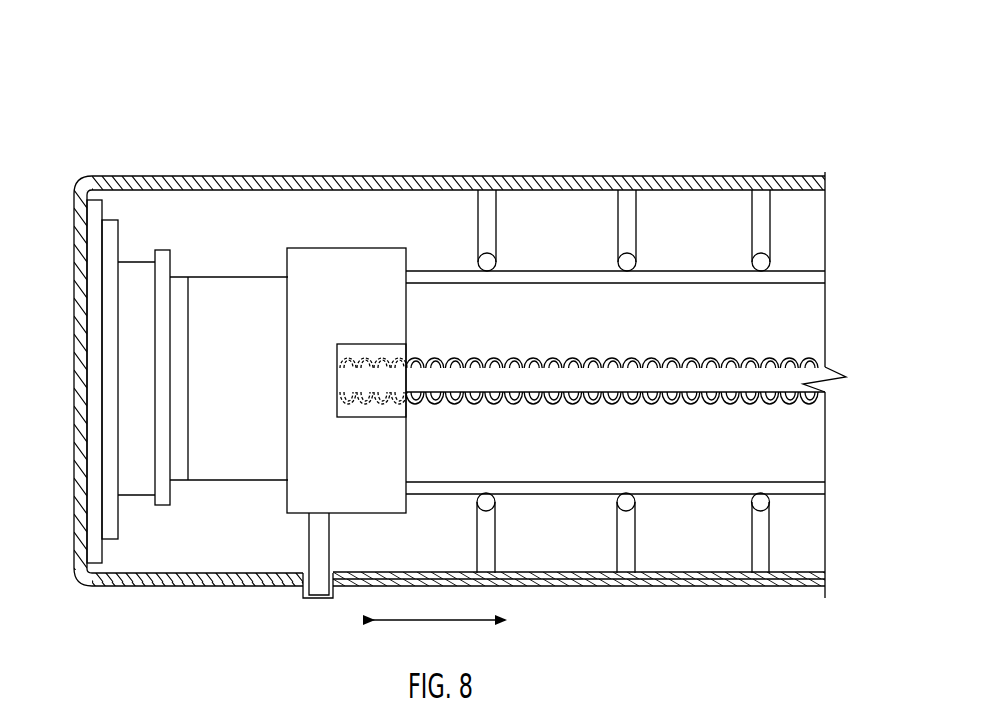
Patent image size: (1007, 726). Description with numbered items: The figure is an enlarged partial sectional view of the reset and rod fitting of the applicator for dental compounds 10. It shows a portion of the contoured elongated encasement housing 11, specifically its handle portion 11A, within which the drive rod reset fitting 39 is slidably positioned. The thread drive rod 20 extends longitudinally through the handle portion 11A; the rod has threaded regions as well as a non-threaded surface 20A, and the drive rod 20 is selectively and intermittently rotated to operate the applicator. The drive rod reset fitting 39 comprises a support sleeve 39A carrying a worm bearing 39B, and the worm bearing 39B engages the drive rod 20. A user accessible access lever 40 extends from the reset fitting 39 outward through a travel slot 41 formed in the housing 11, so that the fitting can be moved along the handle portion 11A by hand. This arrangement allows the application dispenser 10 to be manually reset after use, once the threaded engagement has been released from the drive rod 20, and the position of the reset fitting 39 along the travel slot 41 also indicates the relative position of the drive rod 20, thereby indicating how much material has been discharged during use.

The applicator for dental compounds 10 is at (753, 100).
The encasement housing 11 is at (775, 177).
The handle portion 11A is at (426, 163).
The thread drive rod 20 is at (742, 413).
The non-threaded surface 20A is at (767, 378).
The drive rod reset fitting 39 is at (266, 516).
The support sleeve 39A is at (296, 462).
The worm bearing 39B is at (352, 360).
The access lever 40 is at (321, 585).
The travel slot 41 is at (600, 586).